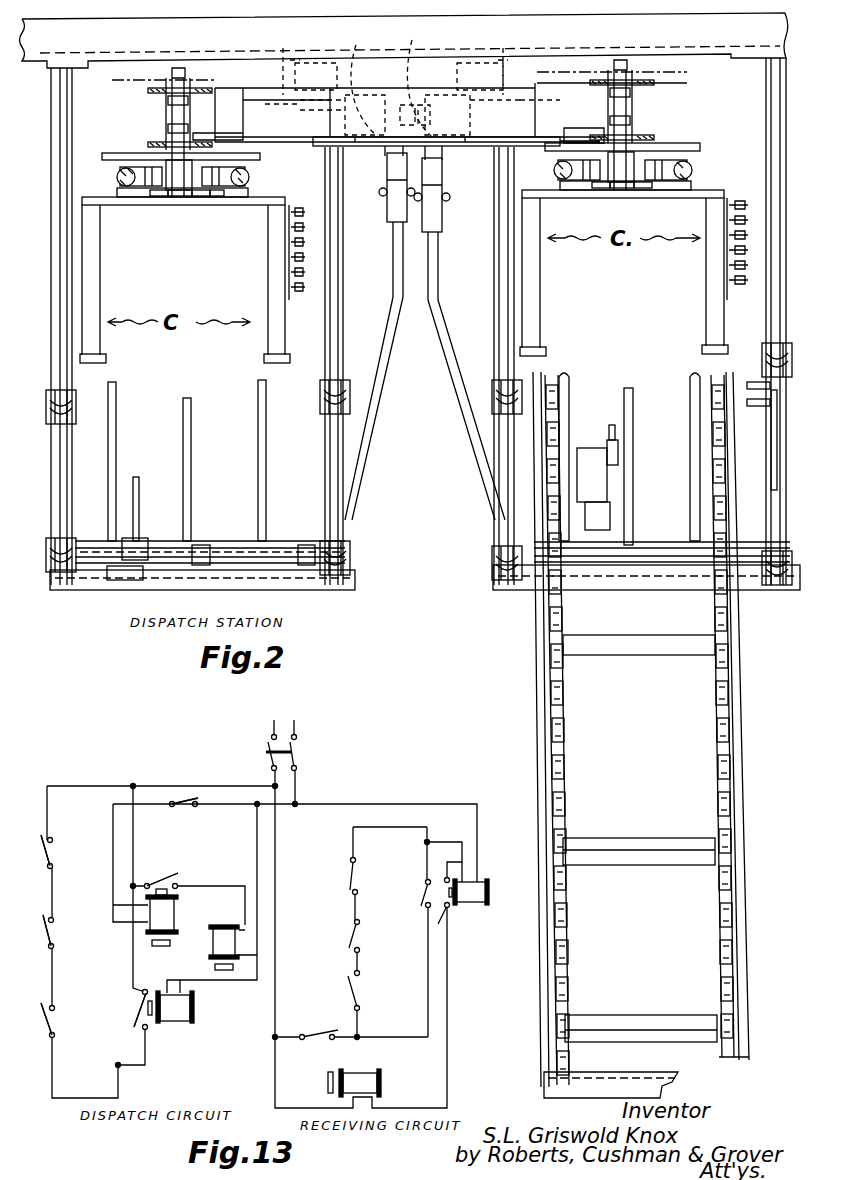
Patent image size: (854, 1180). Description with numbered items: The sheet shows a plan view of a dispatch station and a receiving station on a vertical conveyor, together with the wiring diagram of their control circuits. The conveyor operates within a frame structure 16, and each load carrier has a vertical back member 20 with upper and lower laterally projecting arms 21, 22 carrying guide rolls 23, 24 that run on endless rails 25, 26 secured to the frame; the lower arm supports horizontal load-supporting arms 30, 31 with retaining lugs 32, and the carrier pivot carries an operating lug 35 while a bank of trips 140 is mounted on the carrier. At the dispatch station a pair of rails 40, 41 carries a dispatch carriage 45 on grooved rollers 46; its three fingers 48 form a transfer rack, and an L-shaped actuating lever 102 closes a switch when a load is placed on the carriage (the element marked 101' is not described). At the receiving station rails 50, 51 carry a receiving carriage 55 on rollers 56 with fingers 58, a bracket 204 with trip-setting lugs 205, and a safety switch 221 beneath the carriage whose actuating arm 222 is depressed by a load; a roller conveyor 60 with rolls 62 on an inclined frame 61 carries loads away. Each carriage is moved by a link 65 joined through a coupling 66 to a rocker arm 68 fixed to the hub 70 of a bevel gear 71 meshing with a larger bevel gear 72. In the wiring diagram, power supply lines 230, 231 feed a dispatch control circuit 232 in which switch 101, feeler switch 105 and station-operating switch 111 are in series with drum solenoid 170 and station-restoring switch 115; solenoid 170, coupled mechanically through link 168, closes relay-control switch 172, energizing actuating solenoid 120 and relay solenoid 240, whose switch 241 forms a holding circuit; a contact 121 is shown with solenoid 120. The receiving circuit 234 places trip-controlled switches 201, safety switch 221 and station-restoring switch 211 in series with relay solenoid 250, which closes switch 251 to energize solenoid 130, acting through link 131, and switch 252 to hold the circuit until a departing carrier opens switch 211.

In FIG. 2, the frame structure 16 is at (404, 40).
In FIG. 2, the operating lug 35 is at (176, 68).
In FIG. 2, the larger bevel gear 72 is at (464, 60).
In FIG. 2, the bevel gear 71 is at (392, 80).
In FIG. 2, the hub 70 is at (408, 95).
In FIG. 2, the rail 51 is at (768, 110).
In FIG. 2, the rocker arm 68 is at (386, 152).
In FIG. 2, the coupling 66 is at (387, 214).
In FIG. 2, the endless rail 26 is at (118, 181).
In FIG. 2, the endless rail 25 is at (252, 177).
In FIG. 2, the load-supporting arm 30 is at (273, 206).
In FIG. 2, the guide roll 24 is at (142, 198).
In FIG. 2, the vertical back member 20 is at (180, 198).
In FIG. 2, the guide roll 23 is at (215, 197).
In FIG. 2, the laterally projecting arm 21 is at (158, 198).
In FIG. 2, the laterally projecting arm 22 is at (204, 198).
In FIG. 2, the load-supporting arm 31 is at (96, 274).
In FIG. 2, the rail 41 is at (337, 292).
In FIG. 2, the rail 40 is at (57, 330).
In FIG. 2, the lug 32 is at (106, 356).
In FIG. 2, the grooved roller 46 is at (68, 400).
In FIG. 2, the finger 48 is at (262, 397).
In FIG. 2, the L-shaped actuating lever 102 is at (138, 478).
In FIG. 2, the link 65 is at (444, 354).
In FIG. 2, the rail 50 is at (499, 264).
In FIG. 2, the roller 56 is at (496, 398).
In FIG. 2, the actuating arm 222 is at (612, 430).
In FIG. 2, the finger 58 is at (566, 414).
In FIG. 2, the trip-setting lug 205 is at (748, 402).
In FIG. 2, the bracket 204 is at (771, 457).
In FIG. 2, the safety switch 221 is at (600, 488).
In FIG. 13, the safety switch 221 is at (348, 862).
In FIG. 2, the trip 140 is at (732, 246).
In FIG. 2, the bracket 101' is at (100, 591).
In FIG. 2, the dispatch carriage 45 is at (127, 592).
In FIG. 2, the receiving carriage 55 is at (511, 610).
In FIG. 2, the roller conveyor 60 is at (527, 775).
In FIG. 2, the roll 62 is at (714, 680).
In FIG. 2, the inclined frame 61 is at (540, 826).
In FIG. 13, the control circuit 232 is at (74, 786).
In FIG. 13, the station-restoring switch 115 is at (183, 800).
In FIG. 13, the power supply line 231 is at (270, 767).
In FIG. 13, the power supply line 230 is at (300, 780).
In FIG. 13, the receiving circuit 234 is at (398, 803).
In FIG. 13, the switch 101 is at (69, 849).
In FIG. 13, the relay-control switch 172 is at (170, 874).
In FIG. 13, the drum solenoid 170 is at (174, 912).
In FIG. 13, the switch 252 is at (420, 900).
In FIG. 13, the switch 251 is at (440, 910).
In FIG. 13, the relay solenoid 250 is at (468, 904).
In FIG. 13, the feeler switch 105 is at (46, 934).
In FIG. 13, the link 168 is at (152, 943).
In FIG. 13, the station-operating switch 111 is at (50, 1018).
In FIG. 13, the switch 241 is at (134, 1020).
In FIG. 13, the relay solenoid 240 is at (176, 1022).
In FIG. 13, the contact 121 is at (222, 970).
In FIG. 13, the actuating solenoid 120 is at (232, 958).
In FIG. 13, the trip-controlled switch 201 is at (353, 968).
In FIG. 13, the station-restoring switch 211 is at (316, 1034).
In FIG. 13, the link 131 is at (328, 1080).
In FIG. 13, the solenoid 130 is at (362, 1078).